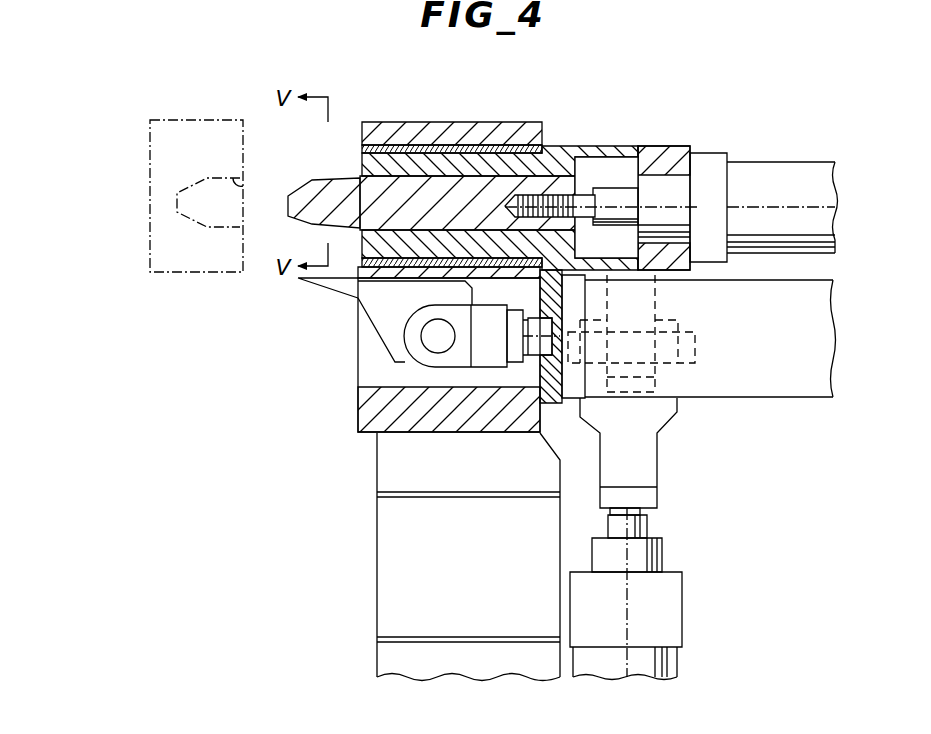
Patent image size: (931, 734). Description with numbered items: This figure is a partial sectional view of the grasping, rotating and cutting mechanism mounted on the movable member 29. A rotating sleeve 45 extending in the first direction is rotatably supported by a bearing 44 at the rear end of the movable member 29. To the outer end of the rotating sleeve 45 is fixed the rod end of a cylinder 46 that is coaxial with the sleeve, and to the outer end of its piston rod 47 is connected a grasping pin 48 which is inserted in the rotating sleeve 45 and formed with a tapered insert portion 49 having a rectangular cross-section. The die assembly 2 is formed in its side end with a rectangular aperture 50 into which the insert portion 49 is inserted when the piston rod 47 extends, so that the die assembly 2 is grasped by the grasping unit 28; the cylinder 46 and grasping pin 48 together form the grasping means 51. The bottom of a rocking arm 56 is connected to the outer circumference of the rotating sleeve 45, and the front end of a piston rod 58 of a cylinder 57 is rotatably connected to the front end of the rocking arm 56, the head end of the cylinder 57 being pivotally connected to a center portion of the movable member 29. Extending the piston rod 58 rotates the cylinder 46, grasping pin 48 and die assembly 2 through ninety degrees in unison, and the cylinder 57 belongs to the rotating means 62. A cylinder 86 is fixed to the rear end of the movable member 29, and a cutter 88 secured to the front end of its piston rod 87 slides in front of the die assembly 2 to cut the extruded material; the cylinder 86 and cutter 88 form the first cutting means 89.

The die assembly 2 is at (188, 120).
The grasping unit 28 is at (682, 549).
The movable member 29 is at (383, 542).
The bearing 44 is at (487, 140).
The rotating sleeve 45 is at (560, 160).
The cylinder 46 is at (765, 175).
The piston rod 47 is at (610, 196).
The grasping pin 48 is at (446, 210).
The tapered insert portion 49 is at (332, 182).
The rectangular aperture 50 is at (243, 184).
The grasping means 51 is at (599, 140).
The rocking arm 56 is at (657, 308).
The cylinder 57 is at (665, 663).
The piston rod 58 is at (640, 477).
The rotating means 62 is at (658, 525).
The cylinder 86 is at (742, 388).
The piston rod 87 is at (483, 365).
The cutter 88 is at (345, 287).
The first cutting means 89 is at (354, 335).